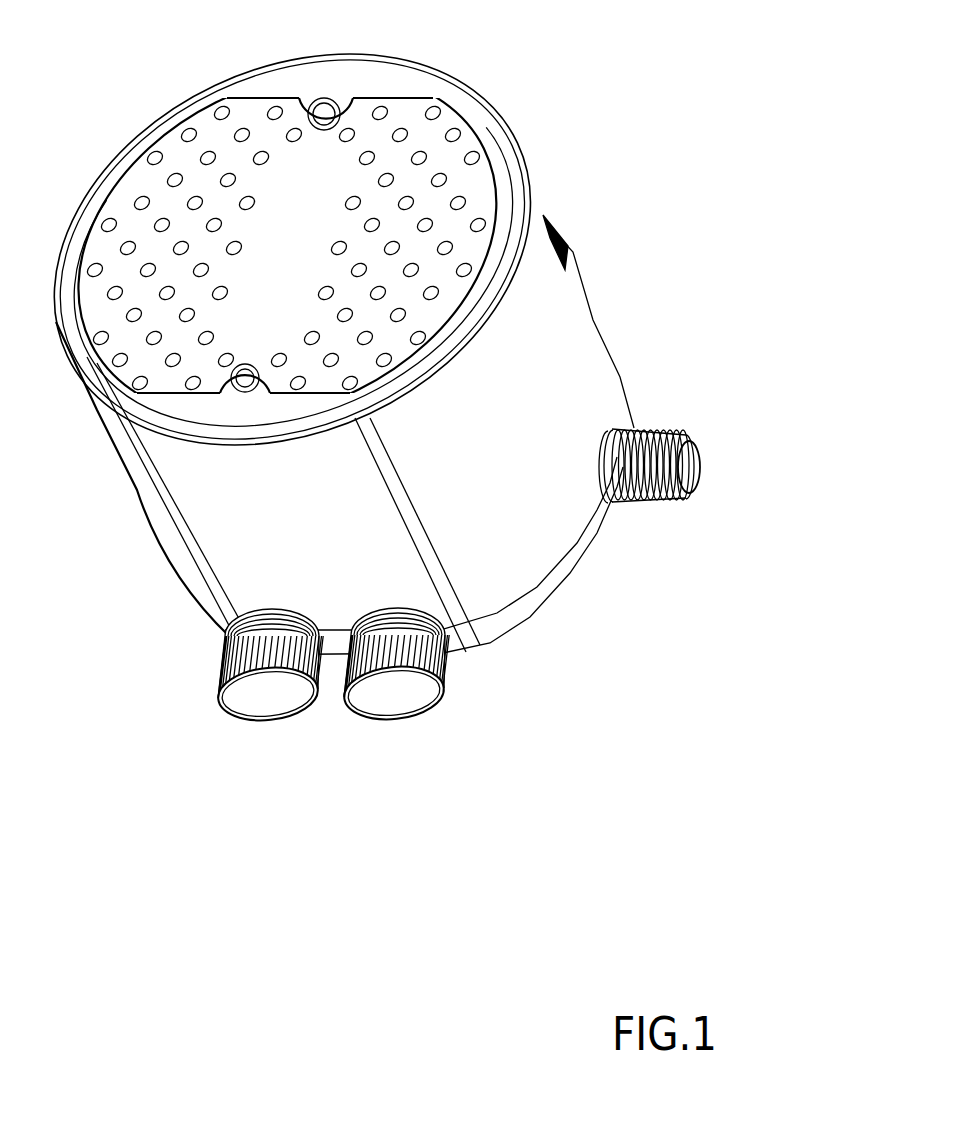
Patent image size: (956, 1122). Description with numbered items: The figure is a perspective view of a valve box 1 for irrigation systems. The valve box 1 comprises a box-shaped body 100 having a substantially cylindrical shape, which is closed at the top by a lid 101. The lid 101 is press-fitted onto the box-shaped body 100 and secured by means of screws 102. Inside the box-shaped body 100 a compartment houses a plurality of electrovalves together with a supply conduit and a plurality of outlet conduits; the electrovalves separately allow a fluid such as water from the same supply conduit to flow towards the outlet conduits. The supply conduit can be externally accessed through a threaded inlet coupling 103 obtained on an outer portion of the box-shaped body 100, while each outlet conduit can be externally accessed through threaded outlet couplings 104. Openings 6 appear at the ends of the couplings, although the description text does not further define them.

The valve box 1 is at (652, 150).
The box-shaped body 100 is at (610, 328).
The lid 101 is at (393, 72).
The screws 102 is at (320, 108).
The threaded inlet coupling 103 is at (688, 467).
The threaded outlet couplings 104 is at (267, 613).
The connection opening 6 is at (573, 247).